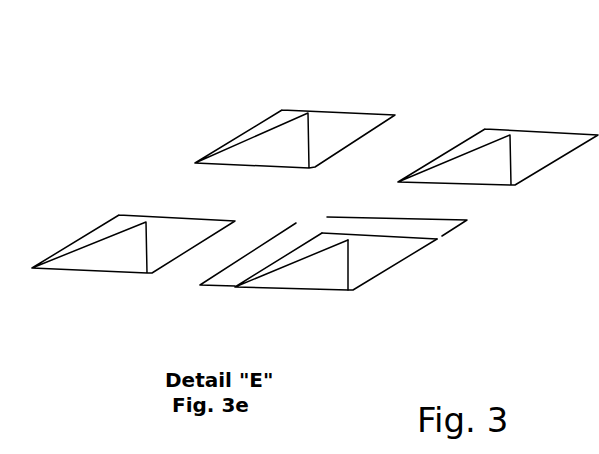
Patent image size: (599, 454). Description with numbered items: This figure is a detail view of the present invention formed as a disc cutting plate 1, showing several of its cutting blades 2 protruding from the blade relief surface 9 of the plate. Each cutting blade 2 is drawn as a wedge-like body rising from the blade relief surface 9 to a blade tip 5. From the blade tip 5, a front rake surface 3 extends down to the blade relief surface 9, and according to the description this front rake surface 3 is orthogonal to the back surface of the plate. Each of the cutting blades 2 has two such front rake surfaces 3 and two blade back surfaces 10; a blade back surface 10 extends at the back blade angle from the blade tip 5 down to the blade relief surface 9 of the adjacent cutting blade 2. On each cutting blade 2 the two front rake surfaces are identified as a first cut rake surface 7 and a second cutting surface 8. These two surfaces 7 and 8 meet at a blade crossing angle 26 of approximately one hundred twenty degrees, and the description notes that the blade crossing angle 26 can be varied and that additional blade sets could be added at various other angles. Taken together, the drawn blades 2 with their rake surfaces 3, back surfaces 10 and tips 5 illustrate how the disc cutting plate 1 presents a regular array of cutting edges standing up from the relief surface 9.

The disc cutting plate 1 is at (166, 90).
The cutting blade 2 is at (380, 93).
The front rake surface 3 is at (315, 272).
The blade tip 5 is at (308, 113).
The first cut rake surface 7 is at (302, 270).
The second cutting surface 8 is at (542, 148).
The blade relief surface 9 is at (212, 195).
The blade back surface 10 is at (318, 243).
The blade crossing angle 26 is at (333, 247).